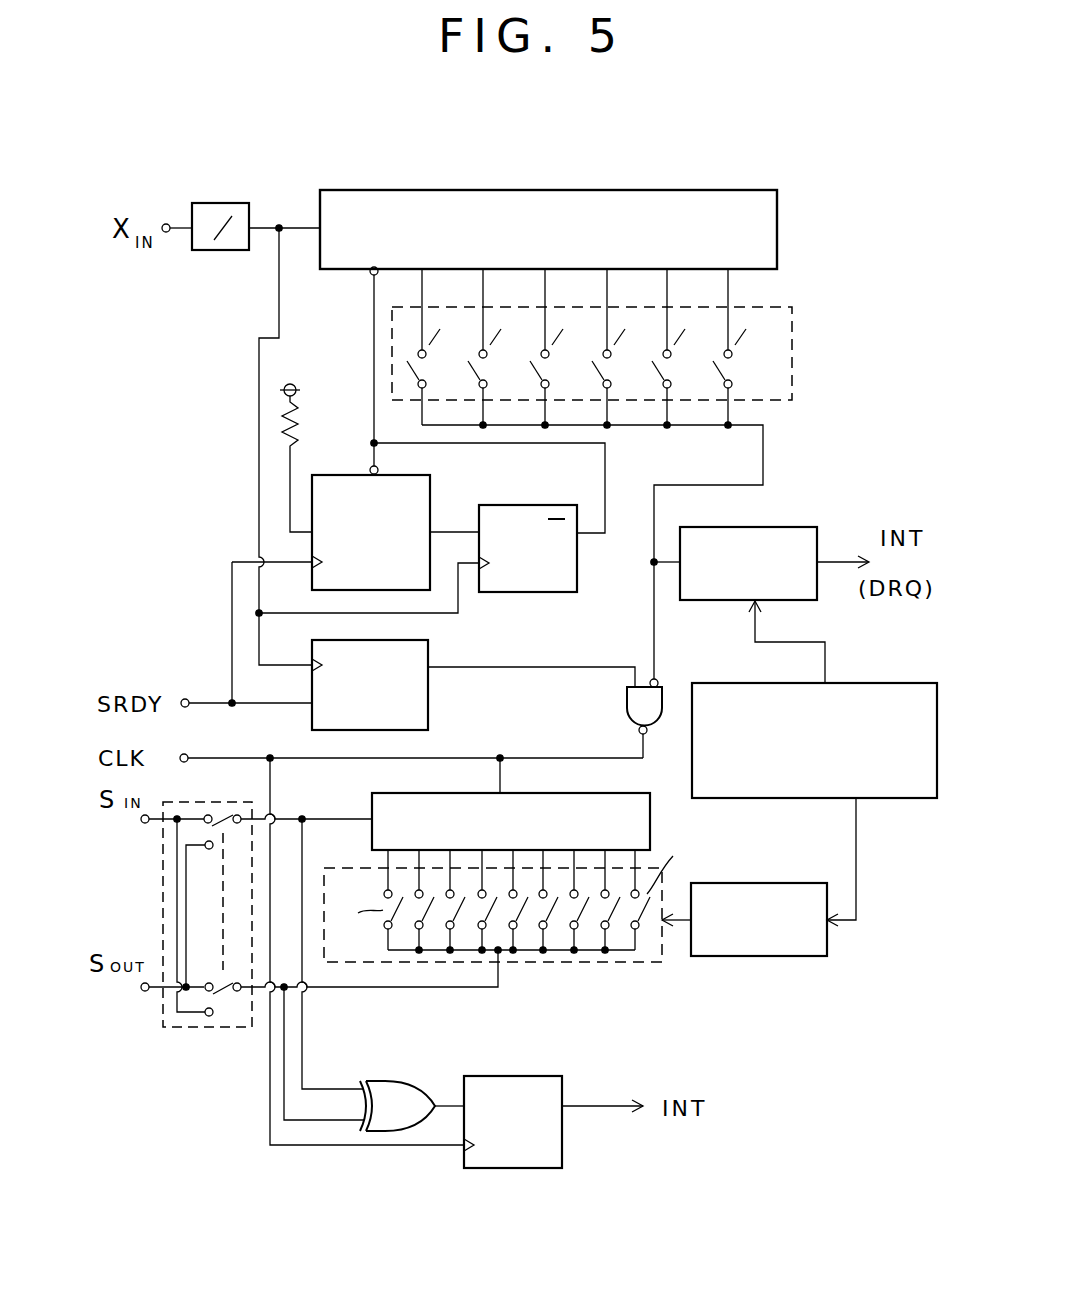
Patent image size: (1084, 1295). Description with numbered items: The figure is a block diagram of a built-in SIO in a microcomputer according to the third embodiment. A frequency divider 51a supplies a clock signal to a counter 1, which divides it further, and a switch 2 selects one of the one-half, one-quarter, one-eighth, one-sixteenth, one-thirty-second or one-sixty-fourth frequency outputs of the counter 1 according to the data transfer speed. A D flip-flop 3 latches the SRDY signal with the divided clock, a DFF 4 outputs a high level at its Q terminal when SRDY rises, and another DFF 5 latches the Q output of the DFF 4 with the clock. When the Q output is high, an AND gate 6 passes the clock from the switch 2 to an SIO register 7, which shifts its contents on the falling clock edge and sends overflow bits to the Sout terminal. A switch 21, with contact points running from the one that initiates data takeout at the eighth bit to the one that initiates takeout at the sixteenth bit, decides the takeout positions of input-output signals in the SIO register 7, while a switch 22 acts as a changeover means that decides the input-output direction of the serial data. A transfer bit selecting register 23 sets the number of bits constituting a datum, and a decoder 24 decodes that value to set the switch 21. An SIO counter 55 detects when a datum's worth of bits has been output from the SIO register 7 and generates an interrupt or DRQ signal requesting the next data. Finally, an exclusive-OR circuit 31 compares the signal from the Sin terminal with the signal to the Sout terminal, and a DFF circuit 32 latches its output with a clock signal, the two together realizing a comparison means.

The counter 1 is at (777, 231).
The switch 2 is at (807, 360).
The D flip-flop circuit 3 is at (428, 706).
The DFF 4 is at (345, 473).
The DFF 5 is at (547, 503).
The AND gate 6 is at (663, 703).
The SIO register 7 is at (650, 820).
The switch 21 is at (587, 962).
The switch 22 is at (177, 1027).
The transfer bit selecting register 23 is at (897, 683).
The decoder 24 is at (773, 956).
The exclusive-OR circuit 31 is at (408, 1083).
The DFF circuit 32 is at (525, 1076).
The frequency divider 51a is at (230, 203).
The SIO counter 55 is at (793, 524).